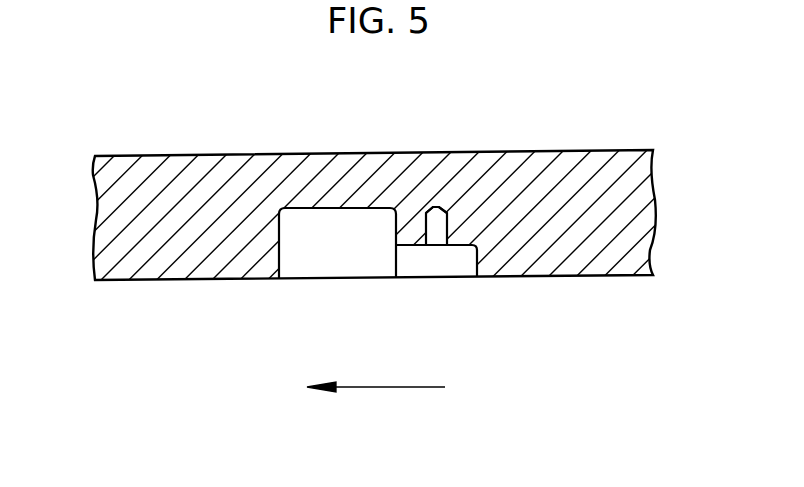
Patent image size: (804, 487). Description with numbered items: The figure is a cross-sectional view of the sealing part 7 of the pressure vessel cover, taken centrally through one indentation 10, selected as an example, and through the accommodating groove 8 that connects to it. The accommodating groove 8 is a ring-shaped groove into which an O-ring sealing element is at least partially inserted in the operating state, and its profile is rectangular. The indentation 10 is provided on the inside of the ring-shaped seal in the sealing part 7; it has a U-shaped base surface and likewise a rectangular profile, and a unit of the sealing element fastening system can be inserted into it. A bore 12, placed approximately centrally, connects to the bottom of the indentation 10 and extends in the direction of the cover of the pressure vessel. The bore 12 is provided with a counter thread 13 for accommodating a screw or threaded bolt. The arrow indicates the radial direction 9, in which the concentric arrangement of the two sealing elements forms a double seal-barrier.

The sealing part 7 is at (563, 168).
The accommodating groove 8 is at (336, 246).
The radial direction 9 is at (387, 388).
The indentation 10 is at (435, 263).
The bore 12 is at (436, 227).
The counter thread 13 is at (454, 222).